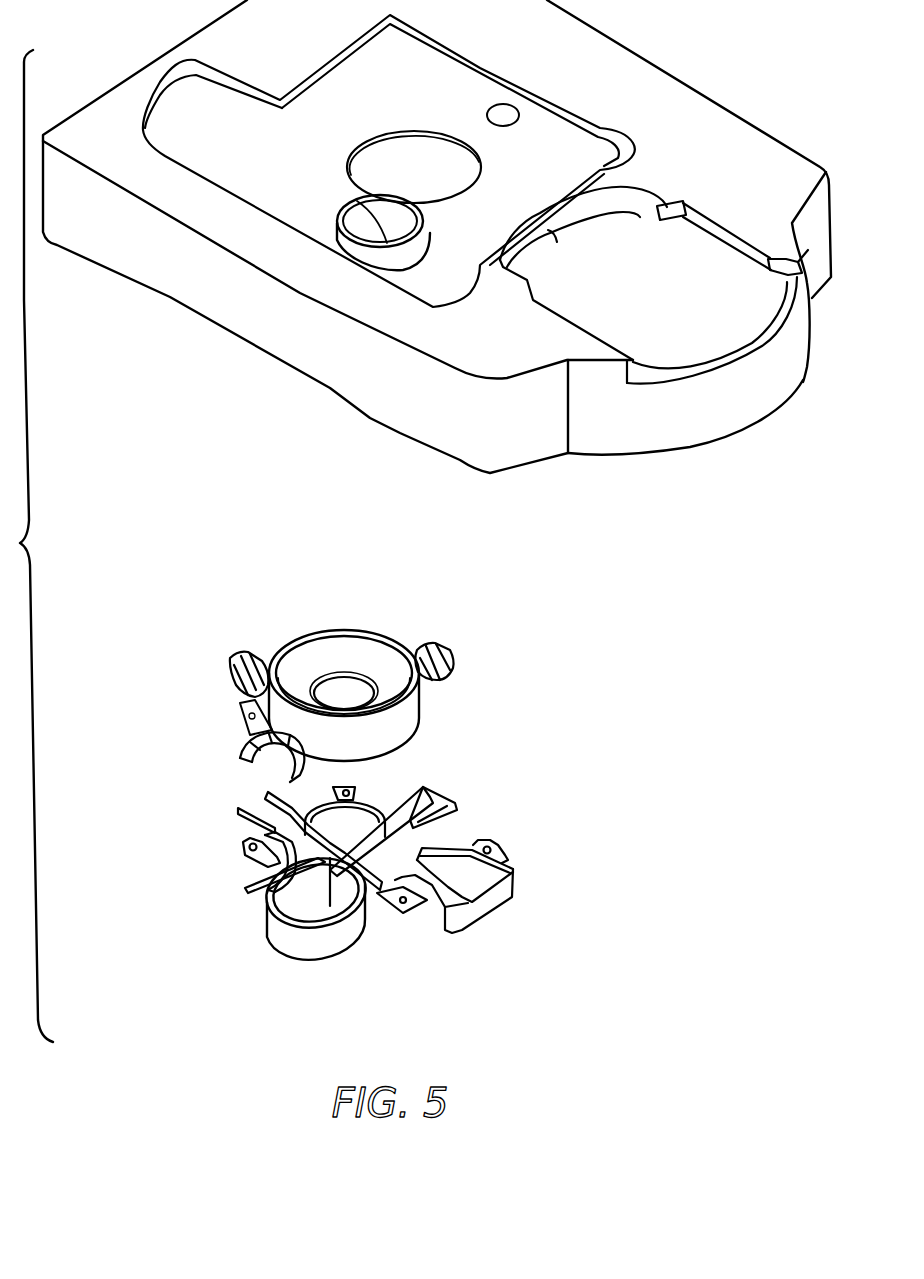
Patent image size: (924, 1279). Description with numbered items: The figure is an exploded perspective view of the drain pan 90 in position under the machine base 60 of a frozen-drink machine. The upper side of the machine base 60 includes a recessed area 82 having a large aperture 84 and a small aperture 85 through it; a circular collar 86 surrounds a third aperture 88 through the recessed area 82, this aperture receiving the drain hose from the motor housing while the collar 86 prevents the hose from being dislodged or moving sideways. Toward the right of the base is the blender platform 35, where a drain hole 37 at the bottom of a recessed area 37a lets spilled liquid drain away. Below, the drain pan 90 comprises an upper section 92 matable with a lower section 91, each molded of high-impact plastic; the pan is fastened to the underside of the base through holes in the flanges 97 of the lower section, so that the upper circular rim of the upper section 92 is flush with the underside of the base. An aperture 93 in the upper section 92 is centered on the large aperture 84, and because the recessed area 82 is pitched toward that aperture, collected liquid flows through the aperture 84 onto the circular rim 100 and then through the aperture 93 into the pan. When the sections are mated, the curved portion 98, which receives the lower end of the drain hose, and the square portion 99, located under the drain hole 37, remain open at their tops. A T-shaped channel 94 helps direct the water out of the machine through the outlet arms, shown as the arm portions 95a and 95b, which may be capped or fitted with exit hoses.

The machine base 60 is at (820, 230).
The recessed area 82 is at (275, 162).
The large aperture 84 is at (408, 155).
The small aperture 85 is at (503, 112).
The circular collar 86 is at (420, 242).
The third aperture 88 is at (345, 203).
The blender platform 35 is at (648, 316).
The drain hole 37 is at (560, 237).
The recessed area 37a is at (627, 215).
The drain pan 90 is at (183, 815).
The lower section 91 is at (317, 947).
The upper section 92 is at (380, 733).
The aperture 93 is at (350, 687).
The T-shaped channel 94 is at (363, 843).
The arm 95a is at (457, 805).
The clip 95b is at (257, 657).
The flanges 97 is at (347, 790).
The curved portion 98 is at (327, 910).
The square portion 99 is at (517, 868).
The circular rim 100 is at (327, 667).